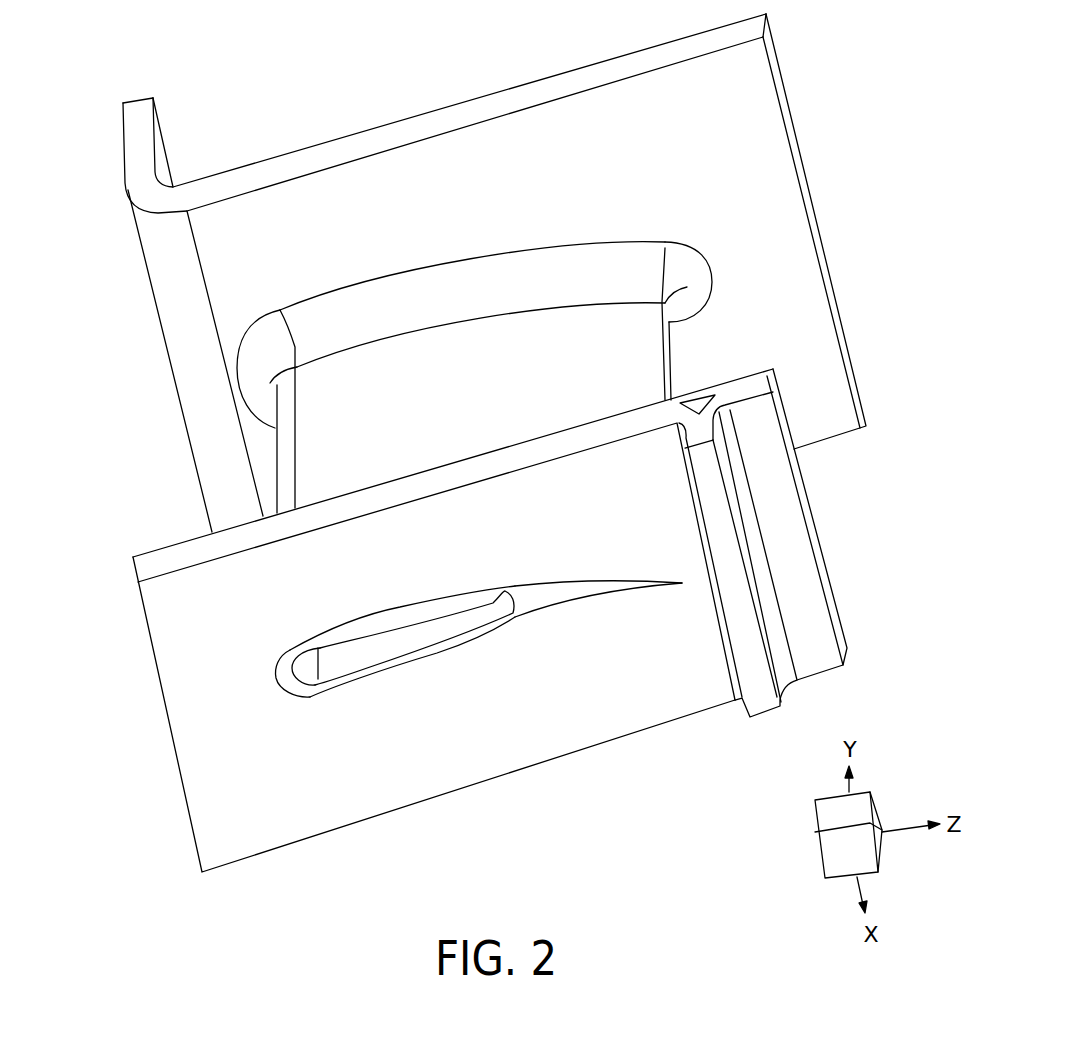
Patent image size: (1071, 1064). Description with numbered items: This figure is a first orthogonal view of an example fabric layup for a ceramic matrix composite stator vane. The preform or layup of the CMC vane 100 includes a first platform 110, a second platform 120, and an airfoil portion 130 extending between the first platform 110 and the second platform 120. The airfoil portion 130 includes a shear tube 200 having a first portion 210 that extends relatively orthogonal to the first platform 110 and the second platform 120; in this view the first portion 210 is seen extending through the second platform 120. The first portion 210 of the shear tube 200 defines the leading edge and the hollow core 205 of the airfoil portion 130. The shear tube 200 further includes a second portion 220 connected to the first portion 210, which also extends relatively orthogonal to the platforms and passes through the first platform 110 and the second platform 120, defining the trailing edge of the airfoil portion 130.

The CMC vane 100 is at (160, 62).
The first platform 110 is at (283, 157).
The second platform 120 is at (148, 642).
The airfoil portion 130 is at (275, 473).
The shear tube 200 is at (333, 622).
The hollow core 205 is at (342, 658).
The first portion 210 is at (282, 668).
The second portion 220 is at (542, 597).